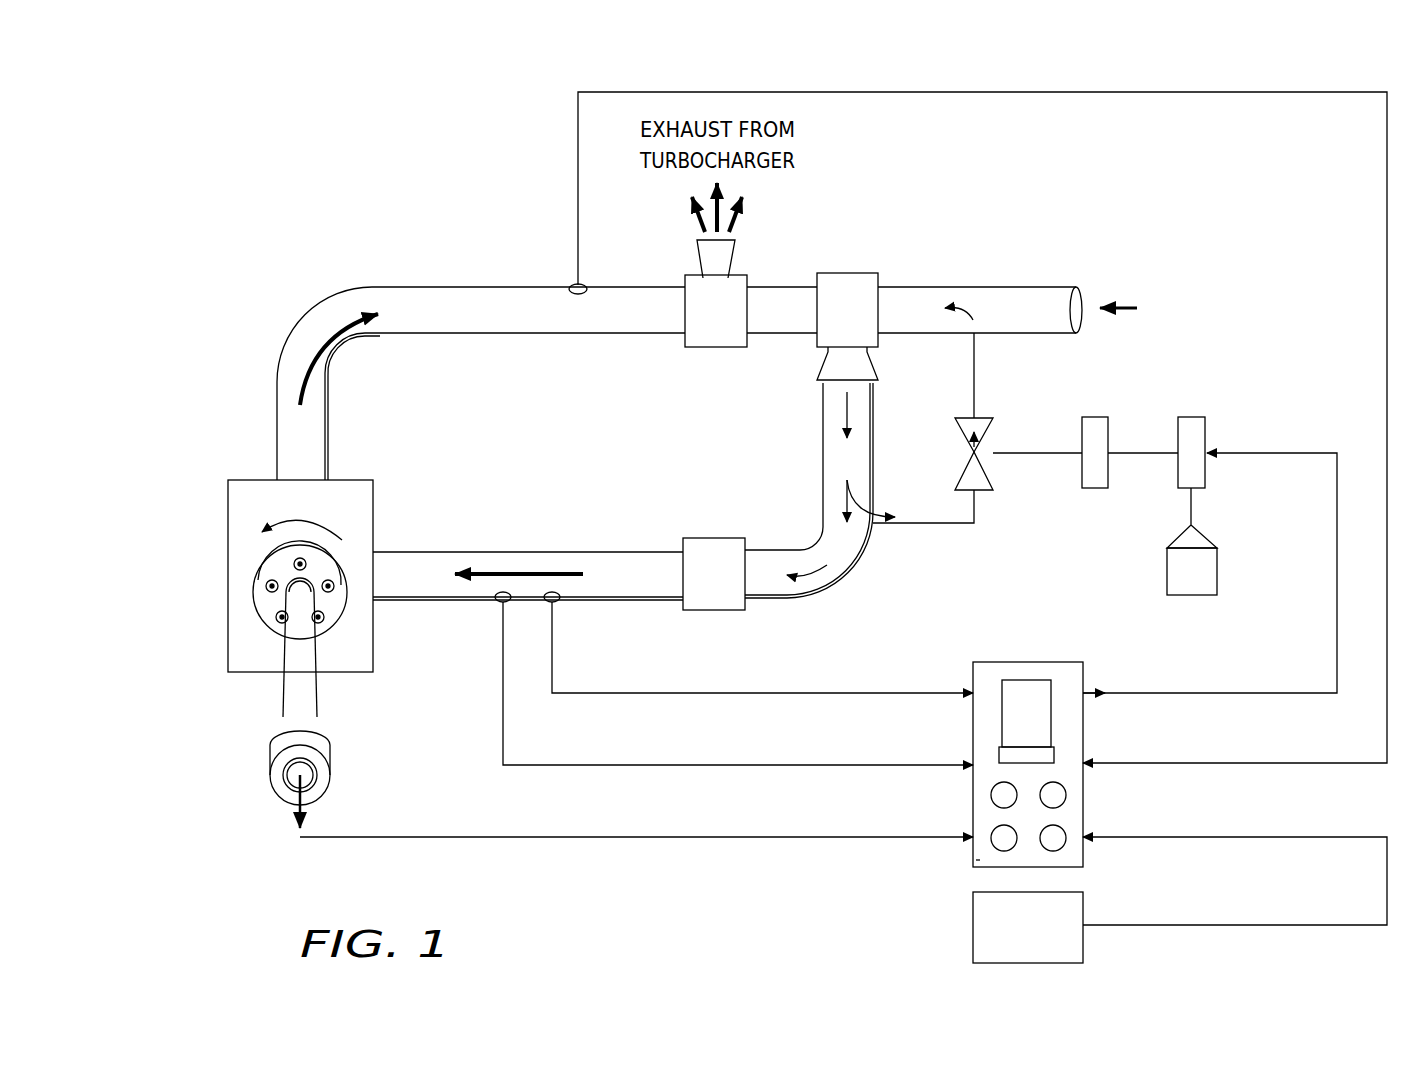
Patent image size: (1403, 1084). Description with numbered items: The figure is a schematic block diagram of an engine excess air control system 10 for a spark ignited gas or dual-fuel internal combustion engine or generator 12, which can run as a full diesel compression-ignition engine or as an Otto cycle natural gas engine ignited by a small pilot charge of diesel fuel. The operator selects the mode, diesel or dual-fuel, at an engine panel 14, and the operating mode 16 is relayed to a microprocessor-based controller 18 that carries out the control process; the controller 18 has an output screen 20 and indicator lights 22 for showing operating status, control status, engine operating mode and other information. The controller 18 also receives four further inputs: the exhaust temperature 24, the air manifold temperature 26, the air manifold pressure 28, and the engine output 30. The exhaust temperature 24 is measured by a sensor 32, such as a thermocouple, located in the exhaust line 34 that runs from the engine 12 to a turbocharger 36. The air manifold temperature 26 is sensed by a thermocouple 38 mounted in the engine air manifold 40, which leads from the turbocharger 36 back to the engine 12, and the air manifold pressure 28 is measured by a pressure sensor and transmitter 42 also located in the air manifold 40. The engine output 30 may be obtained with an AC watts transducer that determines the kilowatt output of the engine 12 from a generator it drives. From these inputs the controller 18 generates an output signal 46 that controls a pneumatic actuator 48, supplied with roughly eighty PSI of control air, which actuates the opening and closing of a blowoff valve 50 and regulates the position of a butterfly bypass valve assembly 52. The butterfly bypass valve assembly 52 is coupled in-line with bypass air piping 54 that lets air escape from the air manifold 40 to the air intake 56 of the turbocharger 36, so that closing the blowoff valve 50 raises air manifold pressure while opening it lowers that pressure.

The engine excess air control system 10 is at (446, 147).
The dual-fuel internal combustion engine 12 is at (228, 575).
The engine panel 14 is at (973, 928).
The operating mode 16 is at (1155, 923).
The microprocessor-based controller 18 is at (1027, 660).
The output screen 20 is at (1041, 729).
The indicator lights 22 is at (975, 856).
The exhaust temperature 24 is at (1042, 94).
The air manifold temperature 26 is at (946, 690).
The air manifold pressure 28 is at (503, 707).
The engine output 30 is at (438, 832).
The sensor 32 is at (574, 284).
The exhaust line 34 is at (428, 335).
The turbocharger 36 is at (867, 230).
The thermocouple 38 is at (560, 603).
The engine air manifold 40 is at (395, 550).
The pressure sensor and transmitter 42 is at (500, 603).
The output signal 46 is at (1292, 450).
The pneumatic actuator 48 is at (1210, 470).
The blowoff valve 50 is at (1095, 490).
The butterfly bypass valve assembly 52 is at (1025, 404).
The bypass air piping 54 is at (935, 525).
The air intake 56 is at (1081, 287).